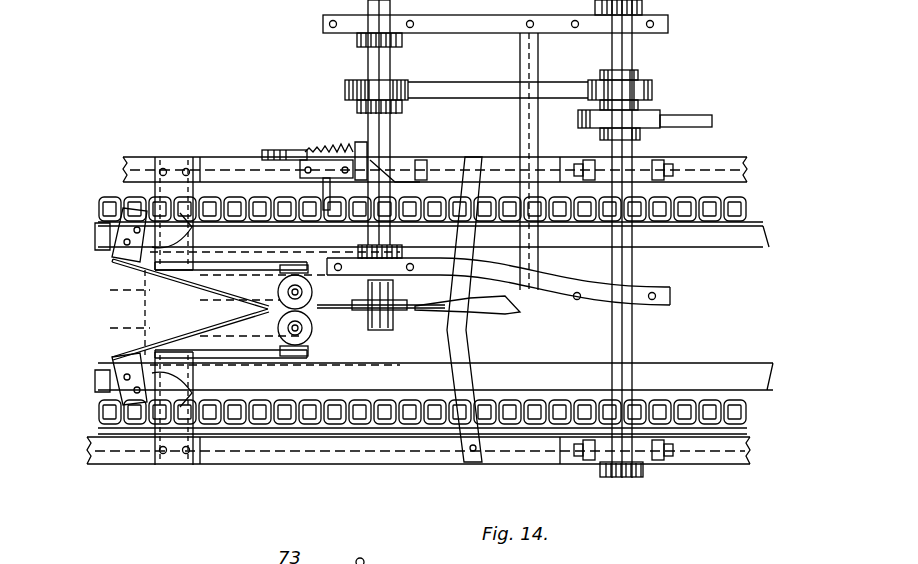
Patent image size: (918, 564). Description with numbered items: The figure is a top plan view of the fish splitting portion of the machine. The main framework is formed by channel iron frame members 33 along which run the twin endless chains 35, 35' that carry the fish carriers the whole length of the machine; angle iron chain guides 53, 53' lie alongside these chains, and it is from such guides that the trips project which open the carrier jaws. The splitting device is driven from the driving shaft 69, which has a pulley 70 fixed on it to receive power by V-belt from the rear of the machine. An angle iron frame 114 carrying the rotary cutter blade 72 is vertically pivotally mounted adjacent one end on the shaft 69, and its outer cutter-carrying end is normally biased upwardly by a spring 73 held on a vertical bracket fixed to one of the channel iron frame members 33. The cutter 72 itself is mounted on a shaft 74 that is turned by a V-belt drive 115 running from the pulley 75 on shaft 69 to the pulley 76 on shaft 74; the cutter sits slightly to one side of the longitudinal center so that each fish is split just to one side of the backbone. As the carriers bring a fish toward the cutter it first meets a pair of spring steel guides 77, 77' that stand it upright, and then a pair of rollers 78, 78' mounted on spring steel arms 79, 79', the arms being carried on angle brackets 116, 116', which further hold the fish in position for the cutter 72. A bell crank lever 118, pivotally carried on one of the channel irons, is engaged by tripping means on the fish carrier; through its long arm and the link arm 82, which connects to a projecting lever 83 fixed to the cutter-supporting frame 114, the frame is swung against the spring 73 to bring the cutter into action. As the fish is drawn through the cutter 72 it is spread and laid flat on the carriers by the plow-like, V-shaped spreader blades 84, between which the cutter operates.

The angle iron frame 114 is at (672, 25).
The shaft 74 is at (378, 72).
The pulley 76 is at (400, 82).
The V-belt drive 115 is at (472, 92).
The pulley 75 is at (640, 78).
The pulley 70 is at (592, 128).
The driving shaft 69 is at (632, 340).
The projecting lever 83 is at (395, 163).
The spring 73 is at (340, 140).
The link arm 82 is at (278, 150).
The bell crank lever 118 is at (325, 188).
The endless chain 35' is at (408, 179).
The endless chain 35 is at (410, 398).
The channel iron frame member 33 is at (113, 464).
The angle iron chain guide 53' is at (97, 238).
The angle iron chain guide 53 is at (103, 370).
The spring steel guide 77' is at (184, 284).
The spring steel guide 77 is at (184, 334).
The angle bracket 116' is at (195, 233).
The angle bracket 116 is at (172, 359).
The spring steel arm 79' is at (231, 250).
The spring steel arm 79 is at (237, 369).
The roller 78' is at (279, 287).
The roller 78 is at (319, 333).
The rotary cutter blade 72 is at (450, 314).
The spreader blade 84 is at (470, 312).